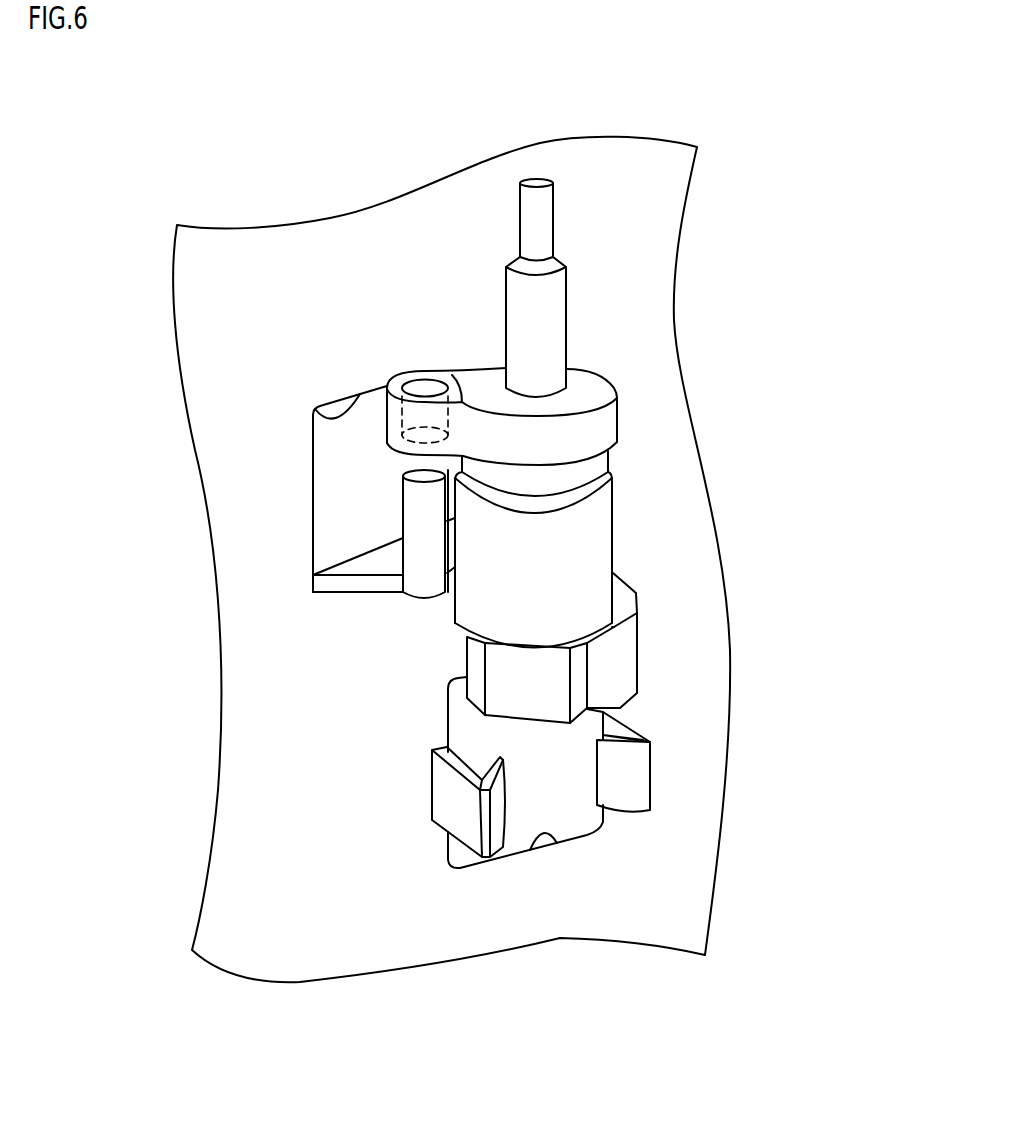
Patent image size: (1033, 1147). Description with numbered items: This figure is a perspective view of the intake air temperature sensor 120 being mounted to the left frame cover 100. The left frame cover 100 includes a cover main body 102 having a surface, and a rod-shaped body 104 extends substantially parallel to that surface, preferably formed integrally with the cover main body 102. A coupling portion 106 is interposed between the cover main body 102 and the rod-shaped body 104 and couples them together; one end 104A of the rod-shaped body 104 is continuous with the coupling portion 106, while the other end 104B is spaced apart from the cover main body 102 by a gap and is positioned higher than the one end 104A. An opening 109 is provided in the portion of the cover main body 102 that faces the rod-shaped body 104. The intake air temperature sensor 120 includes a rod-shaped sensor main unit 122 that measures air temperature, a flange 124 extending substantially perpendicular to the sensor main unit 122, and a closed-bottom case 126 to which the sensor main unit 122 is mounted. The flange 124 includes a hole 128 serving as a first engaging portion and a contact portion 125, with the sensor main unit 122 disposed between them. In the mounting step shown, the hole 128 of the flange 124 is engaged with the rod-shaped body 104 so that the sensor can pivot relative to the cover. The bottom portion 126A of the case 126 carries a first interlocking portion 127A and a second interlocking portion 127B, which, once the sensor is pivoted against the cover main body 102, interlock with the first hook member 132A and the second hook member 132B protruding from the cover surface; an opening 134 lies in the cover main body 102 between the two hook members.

The left frame cover 100 is at (657, 223).
The cover main body 102 is at (683, 458).
The rod-shaped body 104 is at (391, 520).
The one end of the rod-shaped body 104A is at (413, 600).
The other end of the rod-shaped body 104B is at (417, 475).
The coupling portion 106 is at (355, 586).
The opening 109 is at (313, 407).
The intake air temperature sensor 120 is at (569, 318).
The sensor main unit 122 is at (555, 215).
The flange 124 is at (474, 390).
The contact portion 125 is at (594, 383).
The case 126 is at (580, 557).
The bottom portion 126A is at (543, 670).
The first interlocking portion 127A is at (467, 667).
The second interlocking portion 127B is at (607, 660).
The hole 128 is at (423, 388).
The first hook member 132A is at (436, 826).
The second hook member 132B is at (652, 800).
The opening 134 is at (563, 838).